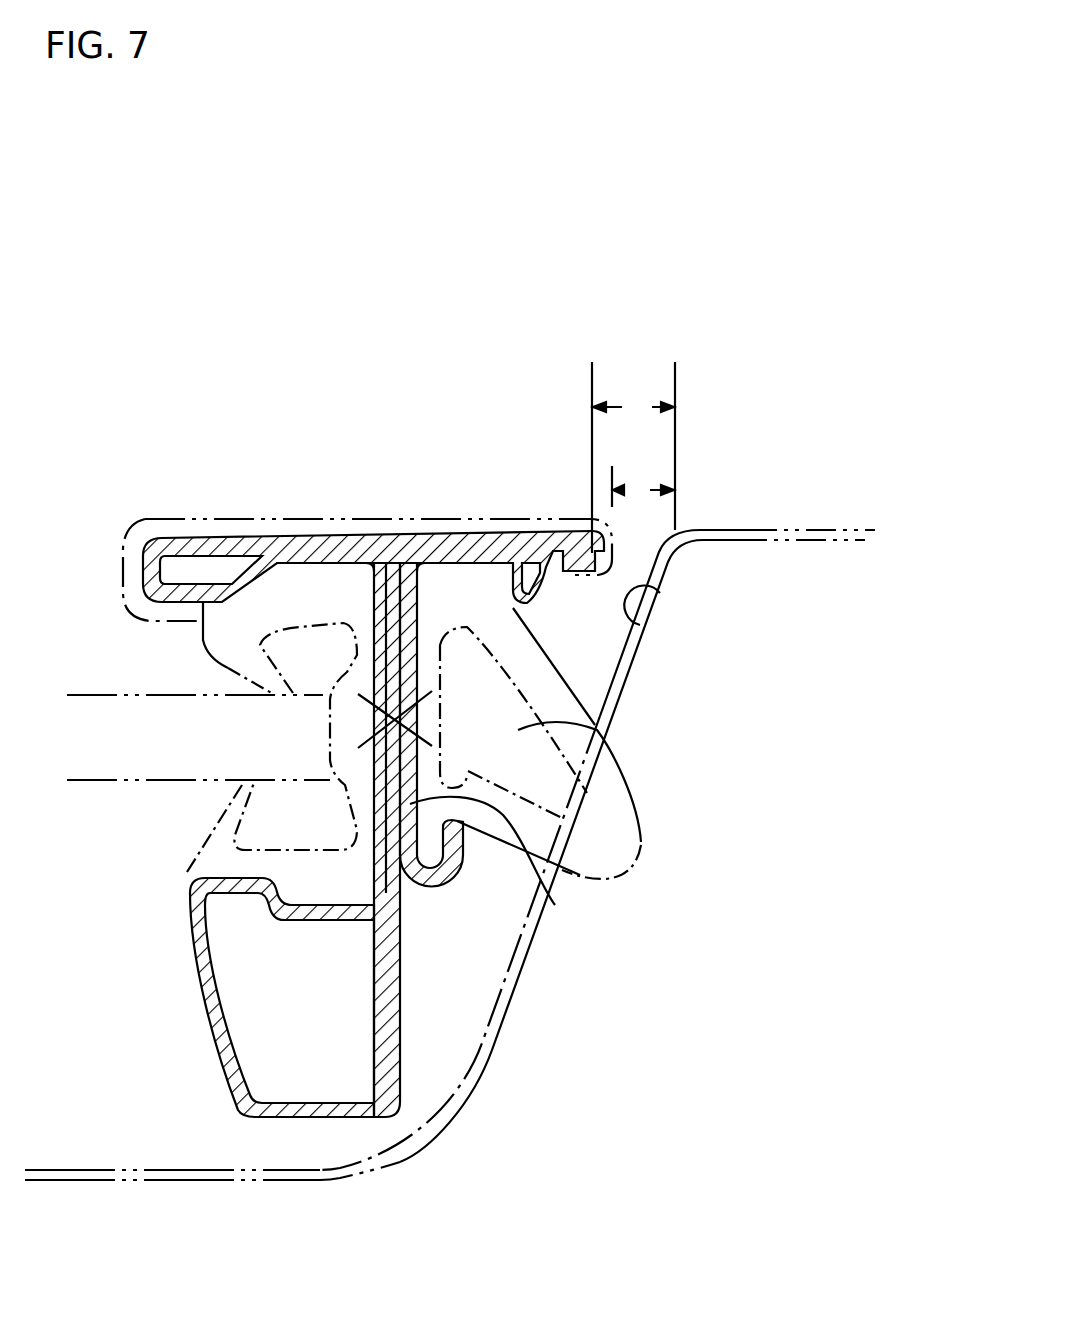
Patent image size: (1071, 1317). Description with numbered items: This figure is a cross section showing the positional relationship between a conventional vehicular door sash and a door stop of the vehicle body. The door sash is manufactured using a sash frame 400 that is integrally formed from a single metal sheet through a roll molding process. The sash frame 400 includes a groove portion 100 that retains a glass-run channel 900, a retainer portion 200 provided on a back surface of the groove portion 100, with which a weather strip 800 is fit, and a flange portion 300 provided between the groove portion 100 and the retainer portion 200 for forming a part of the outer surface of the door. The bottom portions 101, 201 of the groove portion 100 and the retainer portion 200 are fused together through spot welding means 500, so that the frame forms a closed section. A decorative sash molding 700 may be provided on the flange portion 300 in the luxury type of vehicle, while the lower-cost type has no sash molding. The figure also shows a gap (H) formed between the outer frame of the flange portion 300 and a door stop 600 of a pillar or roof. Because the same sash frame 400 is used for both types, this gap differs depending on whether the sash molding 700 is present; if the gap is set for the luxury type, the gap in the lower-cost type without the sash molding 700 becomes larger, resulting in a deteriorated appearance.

The groove portion 100 is at (196, 799).
The bottom portion 101 is at (373, 777).
The retainer portion 200 is at (598, 731).
The bottom portion 201 is at (555, 905).
The flange portion 300 is at (505, 545).
The sash frame 400 is at (258, 402).
The spot welding means 500 is at (430, 744).
The door stop 600 is at (640, 624).
The sash molding 700 is at (377, 518).
The weather strip 800 is at (641, 842).
The glass-run channel 900 is at (205, 660).